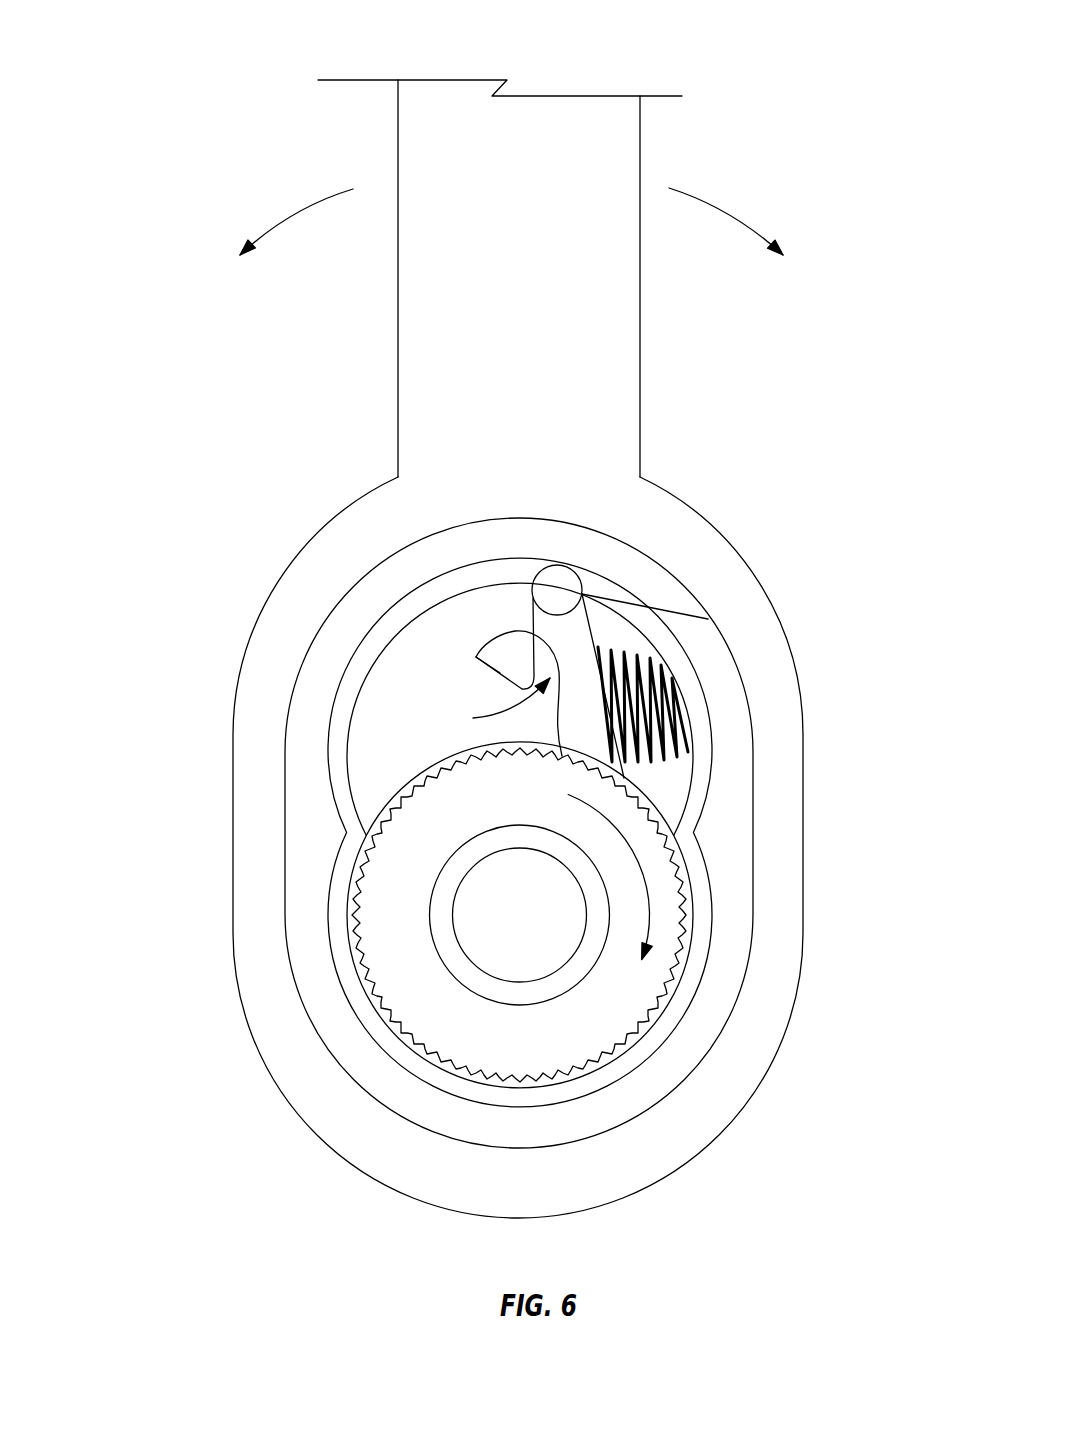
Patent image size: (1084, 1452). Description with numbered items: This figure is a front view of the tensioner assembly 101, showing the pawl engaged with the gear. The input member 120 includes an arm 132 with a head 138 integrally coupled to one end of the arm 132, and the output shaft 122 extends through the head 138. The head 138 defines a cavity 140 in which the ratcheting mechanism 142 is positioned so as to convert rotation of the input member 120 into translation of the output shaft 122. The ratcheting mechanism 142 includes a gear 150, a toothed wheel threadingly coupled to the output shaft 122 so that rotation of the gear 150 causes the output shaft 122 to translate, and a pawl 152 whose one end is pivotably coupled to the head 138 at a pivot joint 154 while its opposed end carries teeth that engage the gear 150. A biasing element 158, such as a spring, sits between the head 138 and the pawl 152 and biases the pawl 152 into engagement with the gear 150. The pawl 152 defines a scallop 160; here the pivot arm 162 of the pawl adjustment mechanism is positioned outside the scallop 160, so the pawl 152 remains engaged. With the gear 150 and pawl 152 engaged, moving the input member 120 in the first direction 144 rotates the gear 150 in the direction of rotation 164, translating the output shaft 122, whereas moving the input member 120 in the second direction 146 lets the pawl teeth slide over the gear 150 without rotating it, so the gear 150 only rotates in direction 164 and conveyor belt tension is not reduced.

The tensioner assembly 101 is at (232, 63).
The input member 120 is at (220, 612).
The output shaft 122 is at (468, 942).
The arm 132 is at (420, 372).
The head 138 is at (299, 1085).
The cavity 140 is at (461, 651).
The ratcheting mechanism 142 is at (398, 758).
The first direction 144 is at (730, 208).
The second direction 146 is at (295, 210).
The gear 150 is at (525, 1065).
The pawl 152 is at (610, 766).
The pivot joint 154 is at (557, 583).
The biasing element 158 is at (652, 657).
The scallop 160 is at (492, 706).
The pivot arm 162 is at (502, 665).
The direction of rotation 164 is at (643, 890).